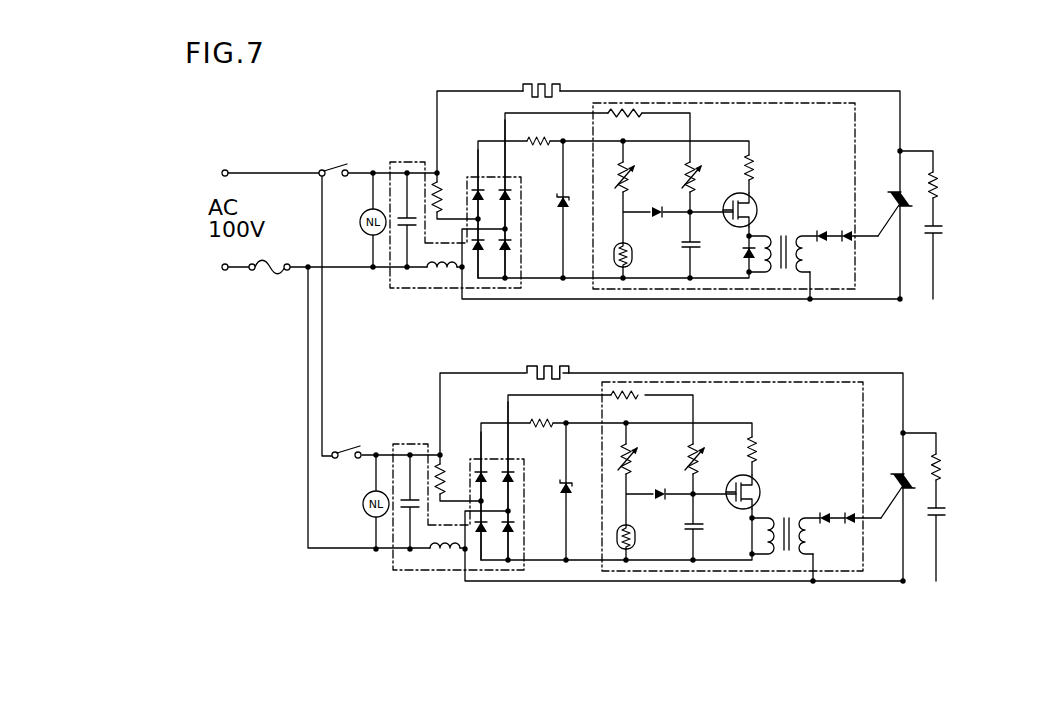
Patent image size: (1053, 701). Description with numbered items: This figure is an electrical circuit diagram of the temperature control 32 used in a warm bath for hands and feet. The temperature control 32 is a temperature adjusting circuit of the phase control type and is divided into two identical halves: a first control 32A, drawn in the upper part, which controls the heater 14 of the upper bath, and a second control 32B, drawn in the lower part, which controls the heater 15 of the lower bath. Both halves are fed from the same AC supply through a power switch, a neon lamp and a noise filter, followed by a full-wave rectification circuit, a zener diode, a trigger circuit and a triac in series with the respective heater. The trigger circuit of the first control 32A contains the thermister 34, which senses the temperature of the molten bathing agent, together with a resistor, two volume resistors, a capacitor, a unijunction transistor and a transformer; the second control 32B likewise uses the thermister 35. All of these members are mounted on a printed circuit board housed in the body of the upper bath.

The heater 14 is at (560, 84).
The heater 15 is at (559, 355).
The temperature control 32 is at (1008, 288).
The first control 32A is at (943, 262).
The second control 32B is at (933, 404).
The thermister 34 is at (632, 250).
The thermister 35 is at (651, 539).